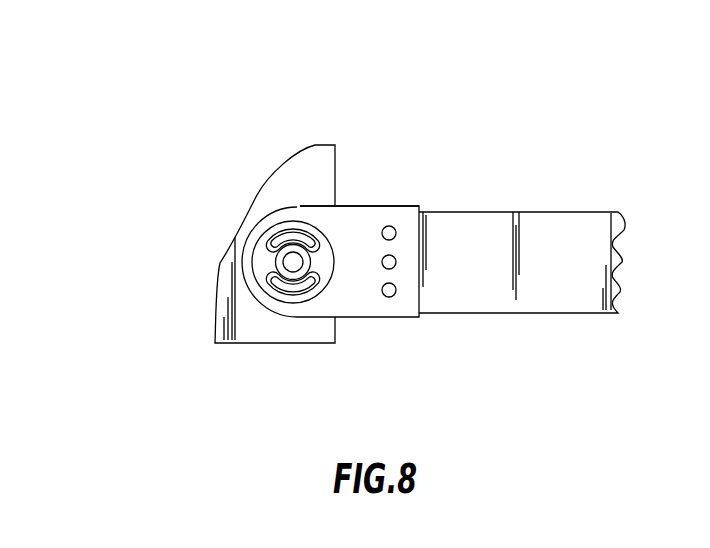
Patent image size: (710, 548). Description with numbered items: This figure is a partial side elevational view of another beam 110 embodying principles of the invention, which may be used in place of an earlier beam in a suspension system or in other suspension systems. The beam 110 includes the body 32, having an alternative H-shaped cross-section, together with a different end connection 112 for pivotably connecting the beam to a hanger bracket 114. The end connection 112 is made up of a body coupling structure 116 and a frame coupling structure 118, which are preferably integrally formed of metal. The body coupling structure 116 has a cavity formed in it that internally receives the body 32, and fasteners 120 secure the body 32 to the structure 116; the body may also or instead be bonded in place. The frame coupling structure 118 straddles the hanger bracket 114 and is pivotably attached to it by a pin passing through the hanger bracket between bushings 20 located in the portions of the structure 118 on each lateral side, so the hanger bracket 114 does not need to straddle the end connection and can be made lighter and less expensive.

The beam 110 is at (581, 123).
The end connection 112 is at (369, 323).
The hanger bracket 114 is at (337, 155).
The body coupling structure 116 is at (388, 206).
The frame coupling structure 118 is at (290, 317).
The fasteners 120 is at (397, 232).
The bushings 20 is at (276, 218).
The body 32 is at (584, 207).